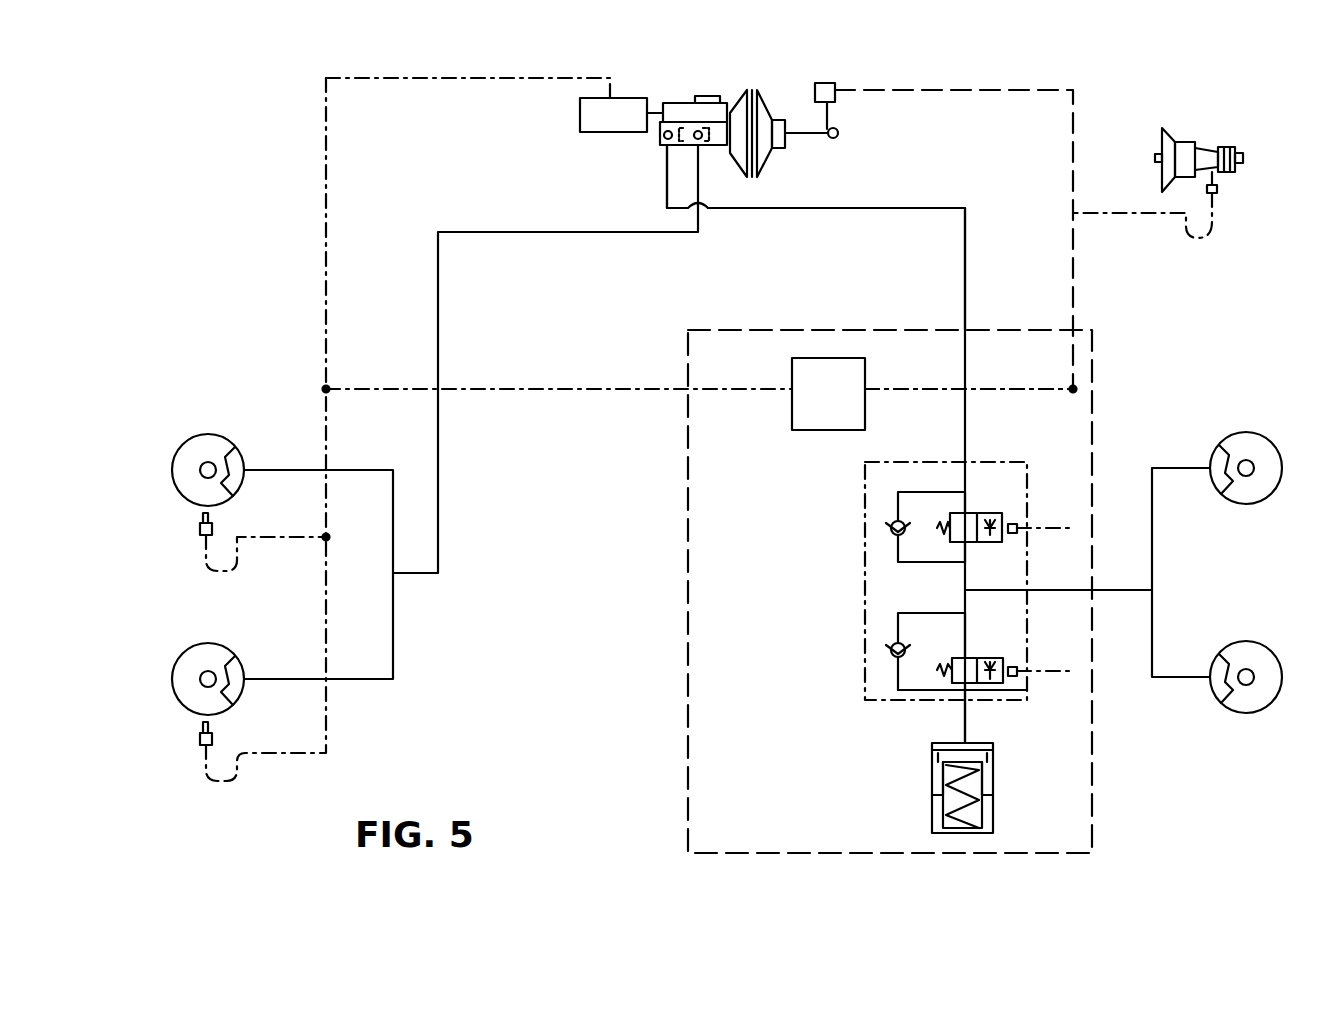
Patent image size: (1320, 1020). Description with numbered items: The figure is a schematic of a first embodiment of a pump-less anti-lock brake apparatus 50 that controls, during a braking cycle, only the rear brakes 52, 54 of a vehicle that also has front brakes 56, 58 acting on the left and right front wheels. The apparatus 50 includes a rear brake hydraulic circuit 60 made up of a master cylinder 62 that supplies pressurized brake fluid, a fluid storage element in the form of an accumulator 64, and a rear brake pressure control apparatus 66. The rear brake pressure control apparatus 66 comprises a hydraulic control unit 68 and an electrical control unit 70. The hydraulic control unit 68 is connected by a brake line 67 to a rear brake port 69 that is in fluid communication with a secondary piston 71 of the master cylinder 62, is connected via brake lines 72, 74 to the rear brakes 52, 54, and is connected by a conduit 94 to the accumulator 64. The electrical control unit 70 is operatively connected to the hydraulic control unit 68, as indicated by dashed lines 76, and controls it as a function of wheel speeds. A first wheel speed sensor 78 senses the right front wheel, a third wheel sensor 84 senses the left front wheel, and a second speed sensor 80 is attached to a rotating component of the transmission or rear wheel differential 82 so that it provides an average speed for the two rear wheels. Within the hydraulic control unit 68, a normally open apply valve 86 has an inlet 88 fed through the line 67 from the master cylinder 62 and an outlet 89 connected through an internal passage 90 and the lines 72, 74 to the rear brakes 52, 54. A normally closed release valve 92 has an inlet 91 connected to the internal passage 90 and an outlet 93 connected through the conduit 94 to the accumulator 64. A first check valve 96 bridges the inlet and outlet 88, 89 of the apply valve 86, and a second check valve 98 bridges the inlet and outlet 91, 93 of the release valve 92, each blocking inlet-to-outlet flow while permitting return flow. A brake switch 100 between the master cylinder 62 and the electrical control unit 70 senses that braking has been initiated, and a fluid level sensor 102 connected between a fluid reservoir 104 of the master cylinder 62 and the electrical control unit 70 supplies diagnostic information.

The pump-less anti-lock brake apparatus 50 is at (962, 66).
The rear brake 52 is at (1217, 690).
The rear brake 54 is at (1215, 485).
The front brake 56 is at (237, 690).
The front brake 58 is at (237, 453).
The rear brake hydraulic circuit 60 is at (917, 203).
The master cylinder 62 is at (712, 146).
The accumulator 64 is at (932, 782).
The rear brake pressure control (RPC) apparatus 66 is at (763, 330).
The brake line 67 is at (965, 289).
The hydraulic control unit (HCU) 68 is at (865, 462).
The rear brake port 69 is at (664, 136).
The electrical control unit (ECU) 70 is at (792, 408).
The secondary piston 71 is at (660, 183).
The brake line 72 is at (1125, 591).
The brake line 74 is at (1153, 608).
The dashed lines 76 is at (933, 390).
The first wheel speed sensor 78 is at (198, 528).
The second speed sensor 80 is at (1218, 190).
The rear wheel differential 82 is at (1187, 140).
The third wheel sensor 84 is at (198, 738).
The apply valve 86 is at (997, 512).
The inlet 88 is at (965, 512).
The outlet 89 is at (965, 543).
The internal passage 90 is at (962, 577).
The inlet 91 is at (966, 658).
The release valve 92 is at (1002, 657).
The outlet 93 is at (968, 687).
The conduit 94 is at (968, 690).
The first check valve 96 is at (888, 534).
The second check valve 98 is at (890, 650).
The brake switch 100 is at (827, 82).
The fluid level sensor 102 is at (632, 98).
The fluid reservoir 104 is at (680, 108).